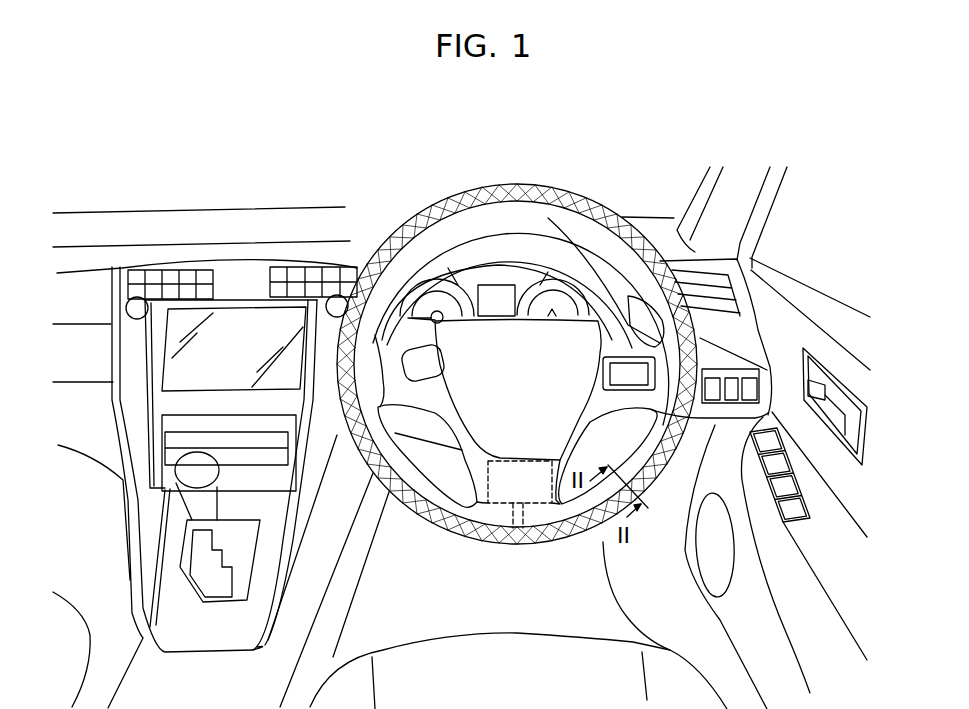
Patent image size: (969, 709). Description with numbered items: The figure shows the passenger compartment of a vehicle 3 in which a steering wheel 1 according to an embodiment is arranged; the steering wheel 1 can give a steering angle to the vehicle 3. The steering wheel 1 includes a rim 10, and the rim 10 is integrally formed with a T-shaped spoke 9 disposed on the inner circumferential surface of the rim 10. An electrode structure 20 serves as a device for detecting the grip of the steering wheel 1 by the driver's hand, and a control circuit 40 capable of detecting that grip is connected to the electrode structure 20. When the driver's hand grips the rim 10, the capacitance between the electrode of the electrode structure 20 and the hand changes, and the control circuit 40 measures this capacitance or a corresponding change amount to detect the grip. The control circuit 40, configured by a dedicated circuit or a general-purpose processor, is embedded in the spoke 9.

The steering wheel 1 is at (618, 345).
The vehicle 3 is at (297, 190).
The T-shaped spoke 9 is at (636, 292).
The rim 10 is at (521, 331).
The electrode structure 20 is at (457, 200).
The control circuit 40 is at (500, 525).